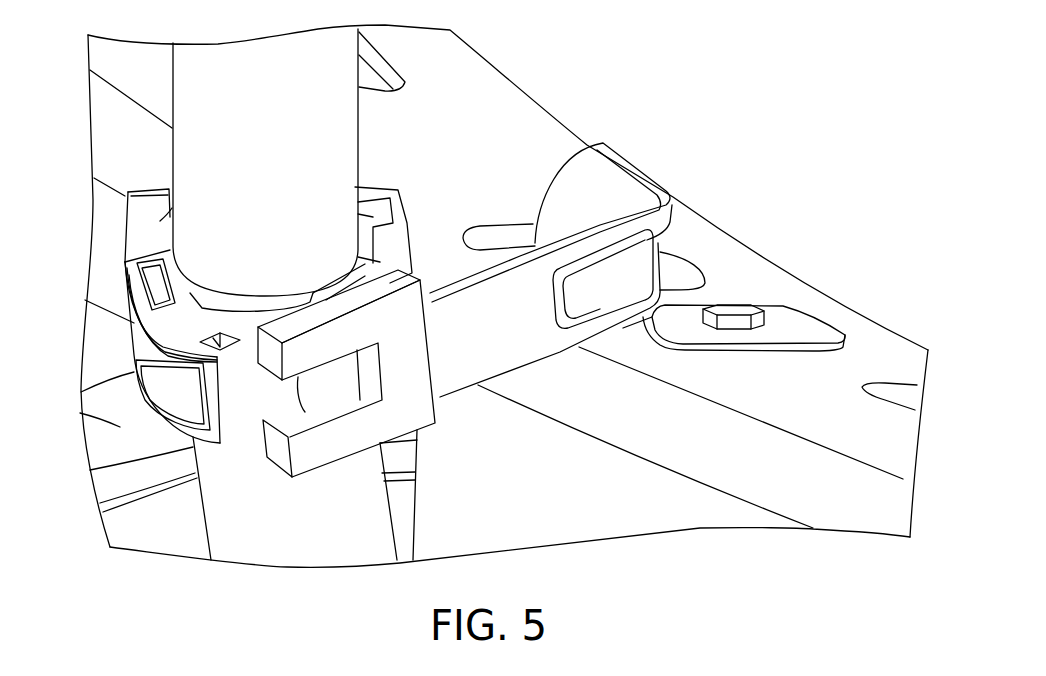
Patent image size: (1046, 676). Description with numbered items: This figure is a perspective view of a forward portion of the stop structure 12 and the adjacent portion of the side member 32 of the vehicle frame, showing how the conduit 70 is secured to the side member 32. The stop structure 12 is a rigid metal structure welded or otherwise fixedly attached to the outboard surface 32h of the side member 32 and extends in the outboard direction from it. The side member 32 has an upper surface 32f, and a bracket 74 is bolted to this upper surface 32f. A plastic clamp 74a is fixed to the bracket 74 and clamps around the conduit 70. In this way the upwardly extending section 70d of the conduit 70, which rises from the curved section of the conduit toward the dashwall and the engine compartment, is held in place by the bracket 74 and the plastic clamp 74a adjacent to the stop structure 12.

The stop structure 12 is at (120, 425).
The second side member 32 is at (765, 253).
The upper surface 32f is at (486, 117).
The outboard surface 32h is at (557, 497).
The conduit 70 is at (332, 522).
The upwardly extending section 70d is at (257, 527).
The bracket 74 is at (605, 198).
The plastic clamp 74a is at (375, 267).